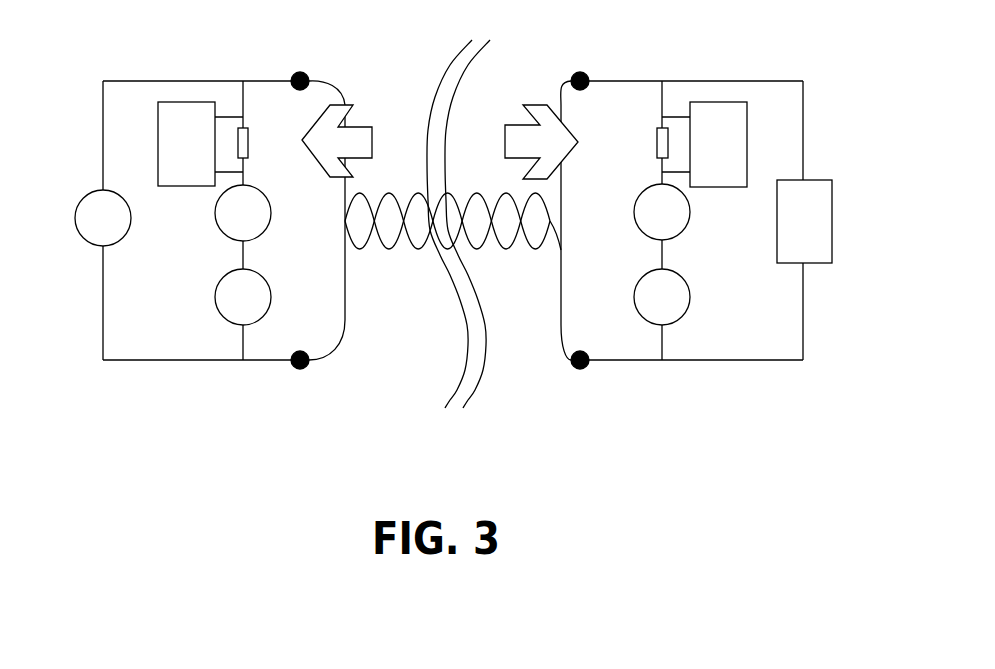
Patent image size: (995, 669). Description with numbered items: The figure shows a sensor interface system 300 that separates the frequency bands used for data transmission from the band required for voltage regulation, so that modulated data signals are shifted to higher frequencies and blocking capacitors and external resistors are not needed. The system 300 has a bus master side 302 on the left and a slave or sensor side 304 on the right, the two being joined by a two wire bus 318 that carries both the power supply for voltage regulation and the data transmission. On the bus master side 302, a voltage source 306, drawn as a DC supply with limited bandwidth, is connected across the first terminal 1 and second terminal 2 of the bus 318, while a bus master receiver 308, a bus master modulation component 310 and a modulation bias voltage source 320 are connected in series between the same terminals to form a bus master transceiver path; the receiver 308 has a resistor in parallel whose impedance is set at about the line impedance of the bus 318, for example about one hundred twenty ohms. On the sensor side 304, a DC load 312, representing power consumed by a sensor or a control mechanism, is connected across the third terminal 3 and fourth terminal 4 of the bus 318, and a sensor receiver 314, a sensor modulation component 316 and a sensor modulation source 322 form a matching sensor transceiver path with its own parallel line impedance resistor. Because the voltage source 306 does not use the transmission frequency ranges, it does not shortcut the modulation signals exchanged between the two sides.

The sensor interface system 300 is at (233, 486).
The bus master side 302 is at (233, 38).
The slave or sensor side 304 is at (651, 39).
The voltage source 306 is at (87, 247).
The bus master receiver 308 is at (176, 102).
The bus master modulation component 310 is at (222, 237).
The DC load 312 is at (832, 203).
The sensor receiver 314 is at (717, 102).
The sensor modulation component 316 is at (688, 222).
The bus 318 is at (437, 302).
The modulation bias voltage source 320 is at (216, 298).
The sensor modulation source 322 is at (683, 316).
The first terminal 1 is at (358, 72).
The second terminal 2 is at (358, 390).
The third terminal 3 is at (535, 72).
The fourth terminal 4 is at (537, 390).